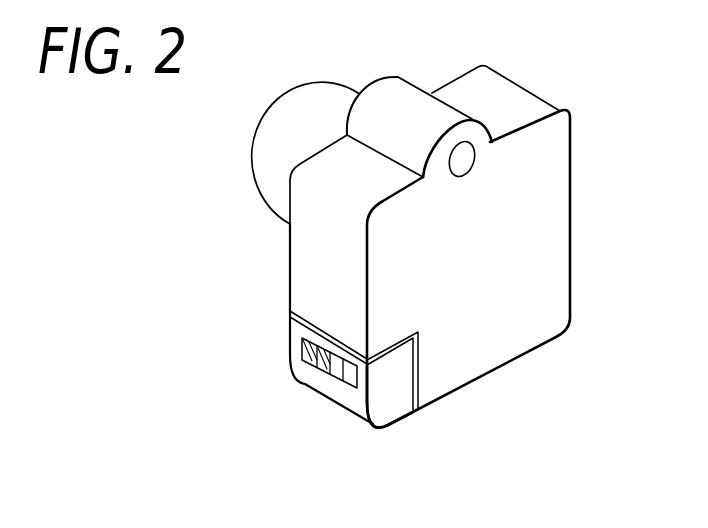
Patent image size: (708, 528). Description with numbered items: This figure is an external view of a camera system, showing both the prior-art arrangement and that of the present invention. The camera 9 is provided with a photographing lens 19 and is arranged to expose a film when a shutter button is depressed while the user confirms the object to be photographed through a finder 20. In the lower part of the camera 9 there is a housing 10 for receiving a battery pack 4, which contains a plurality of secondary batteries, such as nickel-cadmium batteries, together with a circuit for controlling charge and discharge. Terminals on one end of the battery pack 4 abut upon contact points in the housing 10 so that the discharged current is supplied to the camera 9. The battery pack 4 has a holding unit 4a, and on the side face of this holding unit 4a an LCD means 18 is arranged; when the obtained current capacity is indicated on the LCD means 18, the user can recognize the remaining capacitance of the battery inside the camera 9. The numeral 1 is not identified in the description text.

The sensor assembly 1 is at (703, 37).
The battery pack 4 is at (278, 343).
The holding unit 4a is at (393, 398).
The camera 9 is at (563, 237).
The housing 10 is at (422, 370).
The LCD means 18 is at (333, 373).
The photographing lens 19 is at (310, 100).
The finder 20 is at (463, 162).